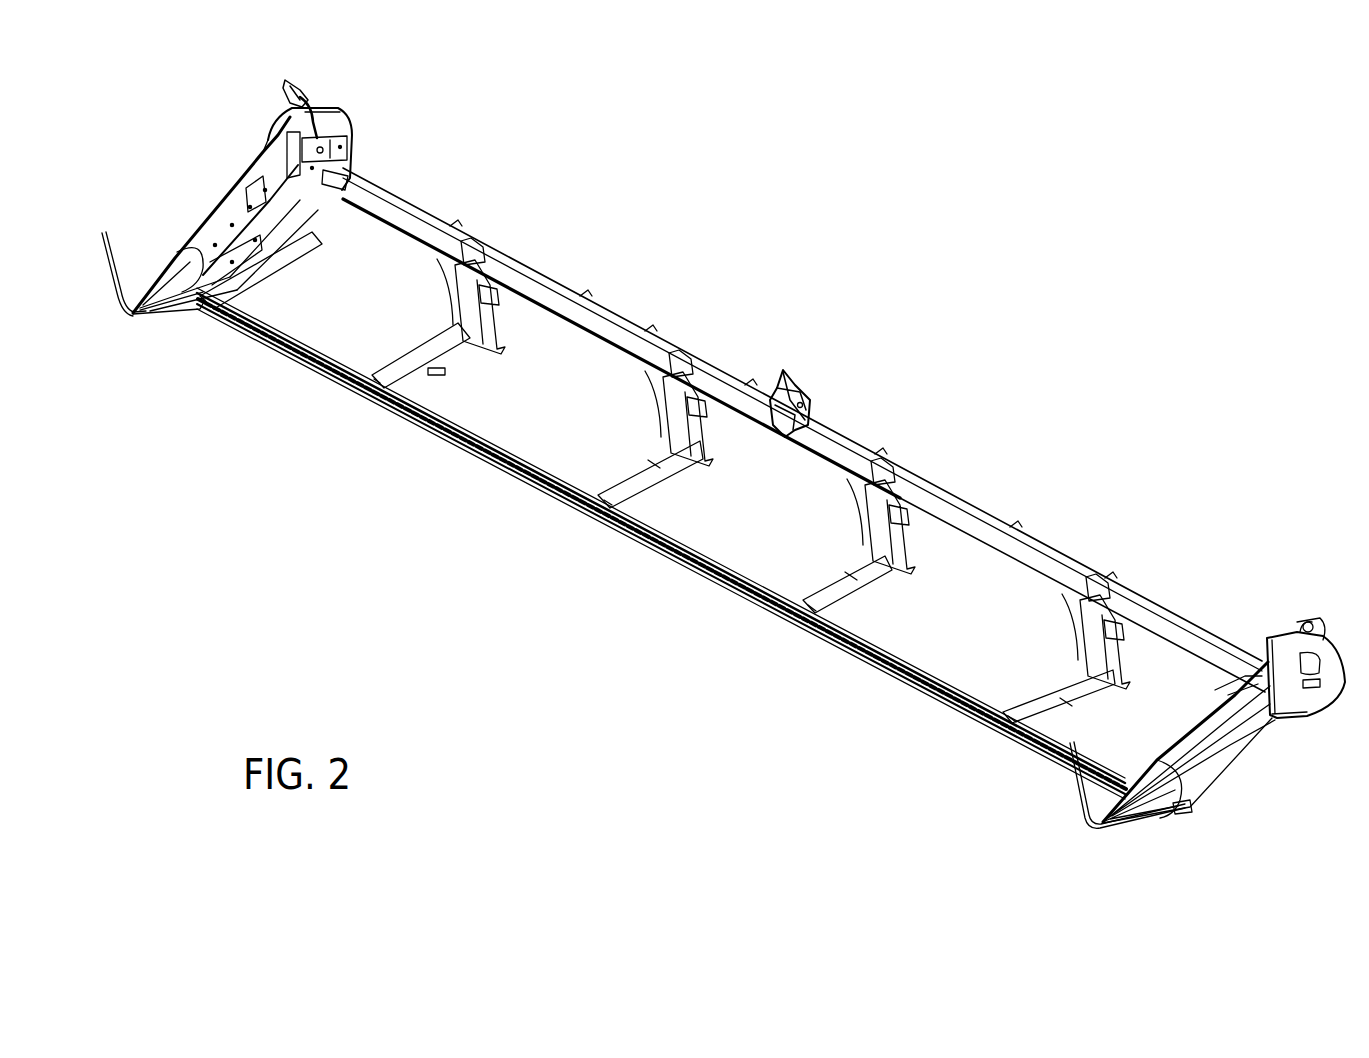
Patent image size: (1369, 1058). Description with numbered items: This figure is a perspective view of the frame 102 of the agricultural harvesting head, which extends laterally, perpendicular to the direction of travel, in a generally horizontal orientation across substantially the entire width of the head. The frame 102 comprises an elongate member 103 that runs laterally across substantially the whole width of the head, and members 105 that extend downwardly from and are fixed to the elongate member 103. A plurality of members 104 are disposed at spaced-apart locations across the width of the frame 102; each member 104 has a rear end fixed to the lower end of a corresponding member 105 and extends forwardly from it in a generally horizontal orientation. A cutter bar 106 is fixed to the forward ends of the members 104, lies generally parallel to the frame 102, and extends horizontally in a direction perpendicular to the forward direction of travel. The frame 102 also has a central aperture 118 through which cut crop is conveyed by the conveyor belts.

The frame 102 is at (831, 430).
The elongate member 103 is at (600, 306).
The members 104 is at (263, 260).
The members 105 is at (484, 316).
The cutter bar 106 is at (678, 558).
The central aperture 118 is at (762, 461).